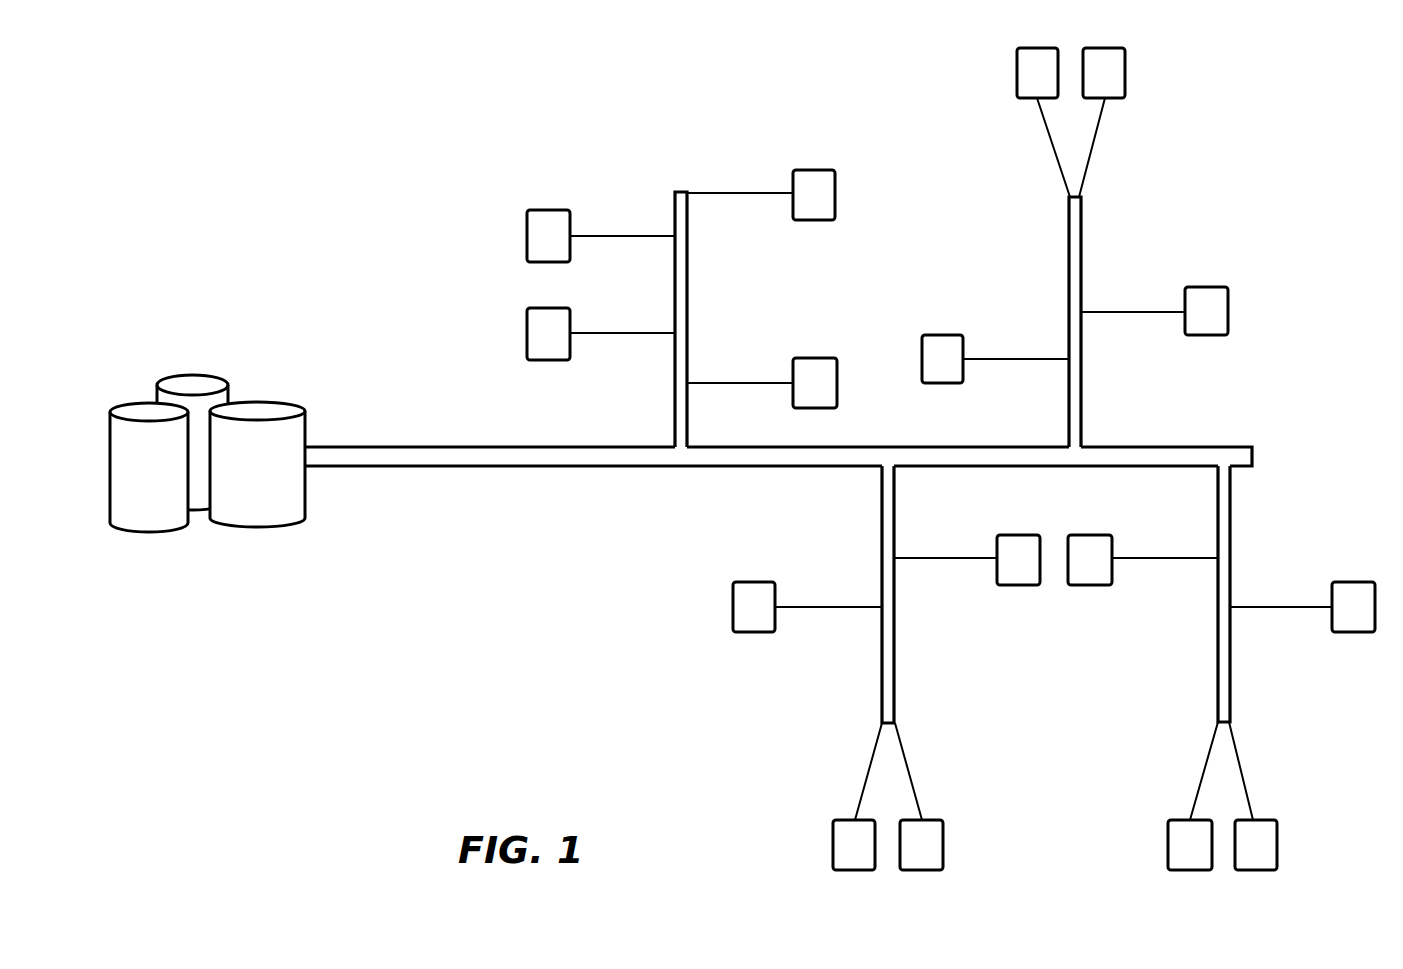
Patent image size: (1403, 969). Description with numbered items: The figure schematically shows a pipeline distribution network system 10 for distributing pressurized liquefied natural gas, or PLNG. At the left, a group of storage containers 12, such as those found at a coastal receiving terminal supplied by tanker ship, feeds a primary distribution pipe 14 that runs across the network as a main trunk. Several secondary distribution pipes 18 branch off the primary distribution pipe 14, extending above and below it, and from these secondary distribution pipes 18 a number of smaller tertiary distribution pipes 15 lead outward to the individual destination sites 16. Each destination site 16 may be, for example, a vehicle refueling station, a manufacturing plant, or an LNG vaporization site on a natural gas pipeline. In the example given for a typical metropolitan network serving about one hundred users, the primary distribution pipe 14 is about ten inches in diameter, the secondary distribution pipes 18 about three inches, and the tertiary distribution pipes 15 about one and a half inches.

The pipeline distribution network system 10 is at (457, 133).
The storage container 12 is at (125, 403).
The primary distribution pipe 14 is at (485, 447).
The tertiary distribution pipe 15 is at (598, 236).
The destination site 16 is at (840, 190).
The secondary distribution pipe 18 is at (1083, 255).